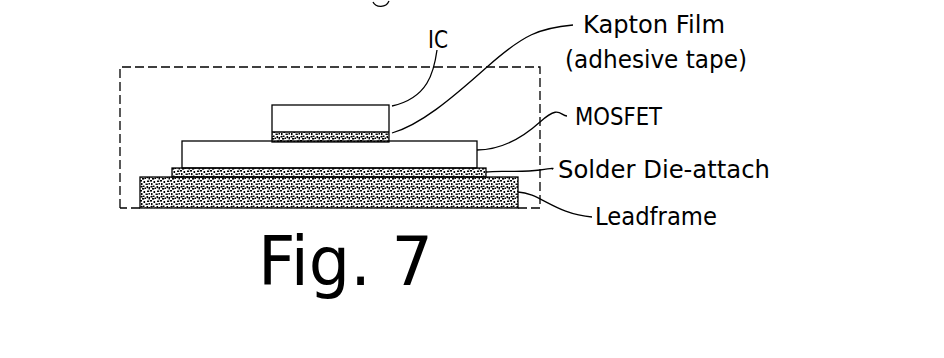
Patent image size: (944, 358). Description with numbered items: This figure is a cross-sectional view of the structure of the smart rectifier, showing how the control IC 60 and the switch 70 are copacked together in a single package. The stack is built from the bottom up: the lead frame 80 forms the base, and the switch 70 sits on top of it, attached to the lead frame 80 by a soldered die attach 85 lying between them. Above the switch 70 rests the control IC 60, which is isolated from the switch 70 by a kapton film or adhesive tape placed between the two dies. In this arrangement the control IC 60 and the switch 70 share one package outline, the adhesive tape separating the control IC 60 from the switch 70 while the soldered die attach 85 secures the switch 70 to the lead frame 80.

The control IC 60 is at (315, 113).
The switch 70 is at (200, 153).
The soldered die attach 85 is at (172, 171).
The lead frame 80 is at (155, 208).